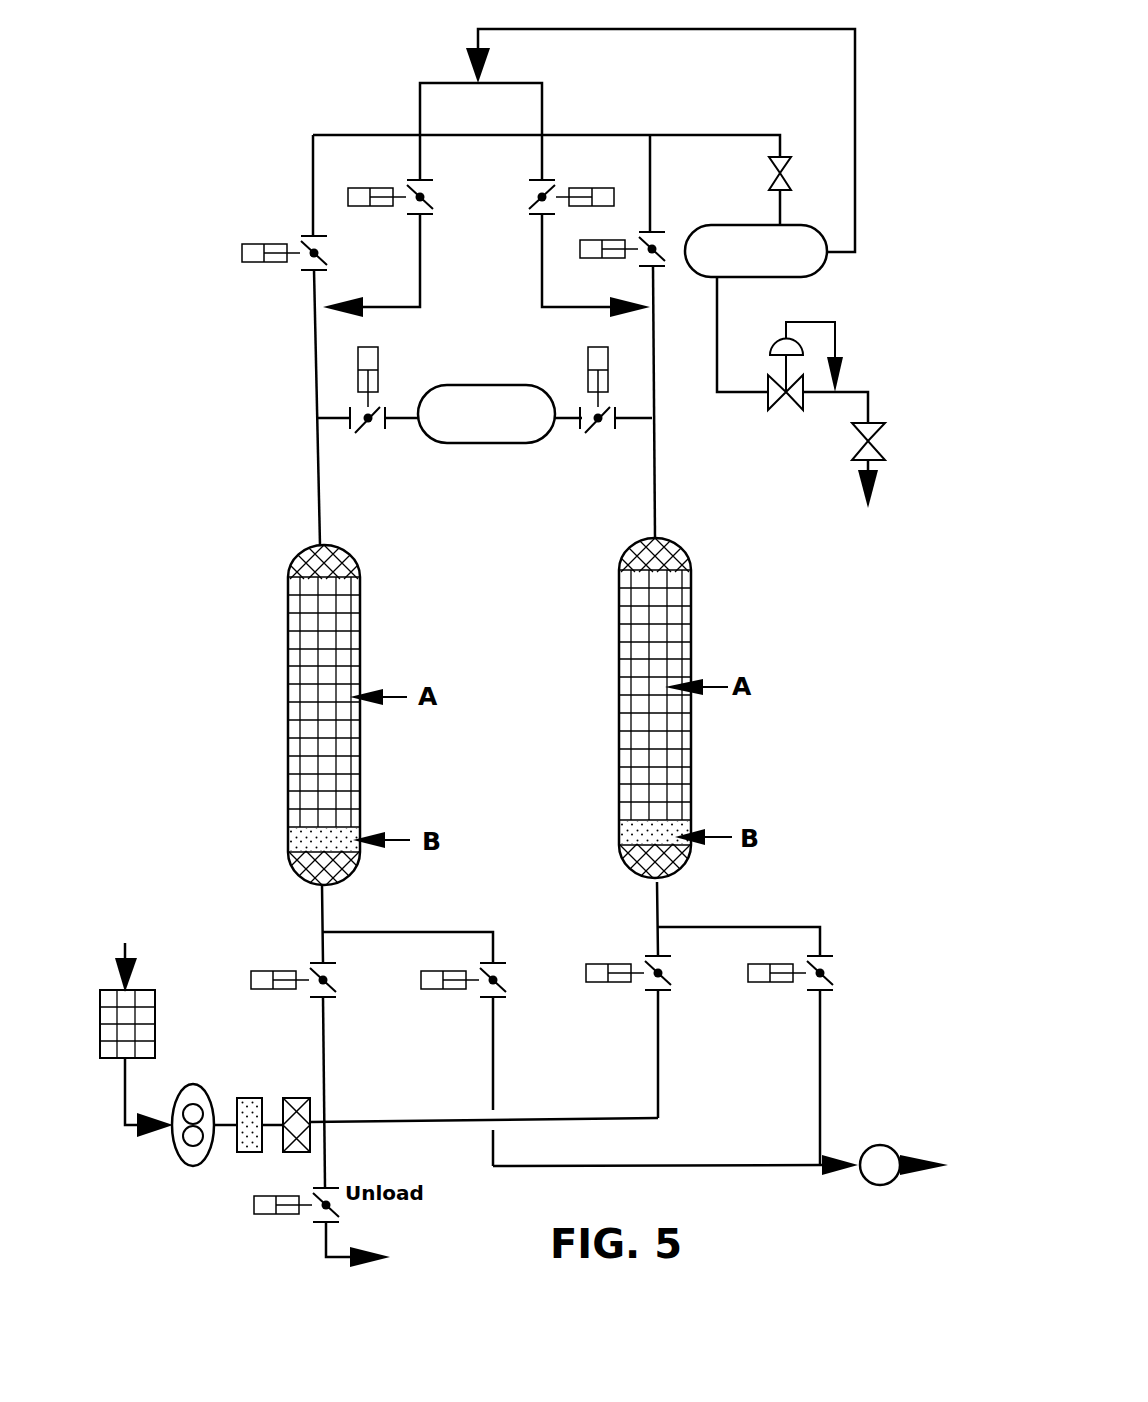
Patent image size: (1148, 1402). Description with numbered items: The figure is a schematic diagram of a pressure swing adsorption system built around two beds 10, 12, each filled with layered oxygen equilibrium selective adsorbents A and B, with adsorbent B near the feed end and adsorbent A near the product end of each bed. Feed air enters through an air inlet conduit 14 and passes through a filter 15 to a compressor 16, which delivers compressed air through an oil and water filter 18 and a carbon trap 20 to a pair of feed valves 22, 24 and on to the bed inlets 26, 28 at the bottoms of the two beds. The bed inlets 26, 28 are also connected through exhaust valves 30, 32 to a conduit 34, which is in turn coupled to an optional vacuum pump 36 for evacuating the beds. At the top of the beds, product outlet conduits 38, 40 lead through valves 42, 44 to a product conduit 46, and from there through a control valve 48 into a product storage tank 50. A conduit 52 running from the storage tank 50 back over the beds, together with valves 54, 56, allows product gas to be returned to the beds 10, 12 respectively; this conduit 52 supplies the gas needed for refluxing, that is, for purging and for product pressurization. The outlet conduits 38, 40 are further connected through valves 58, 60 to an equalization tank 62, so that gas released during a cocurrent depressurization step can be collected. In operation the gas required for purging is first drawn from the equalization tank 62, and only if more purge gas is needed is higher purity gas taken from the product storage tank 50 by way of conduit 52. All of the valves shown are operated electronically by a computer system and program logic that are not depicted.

The bed 10 is at (324, 715).
The bed 12 is at (655, 708).
The air inlet conduit 14 is at (113, 952).
The filter 15 is at (143, 1024).
The compressor 16 is at (193, 1138).
The oil and water filter 18 is at (251, 1145).
The carbon trap 20 is at (296, 1145).
The feed valve 22 is at (314, 1075).
The feed valve 24 is at (646, 1037).
The bed inlet 26 is at (407, 924).
The bed inlet 28 is at (738, 919).
The exhaust valve 30 is at (483, 1064).
The exhaust valve 32 is at (810, 1060).
The conduit 34 is at (657, 1184).
The vacuum pump 36 is at (885, 1160).
The product outlet conduit 38 is at (340, 407).
The product outlet conduit 40 is at (673, 402).
The valve 42 is at (307, 202).
The valve 44 is at (622, 209).
The product conduit 46 is at (546, 133).
The control valve 48 is at (765, 191).
The product storage tank 50 is at (756, 252).
The conduit 52 is at (660, 140).
The valve 54 is at (397, 226).
The valve 56 is at (576, 226).
The valve 58 is at (351, 404).
The valve 60 is at (616, 404).
The equalization tank 62 is at (483, 414).